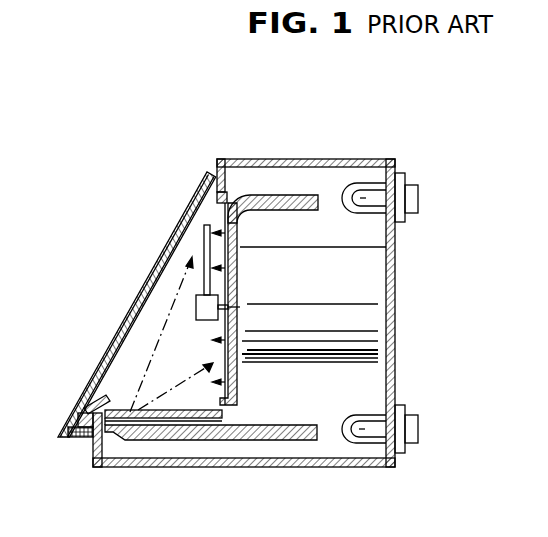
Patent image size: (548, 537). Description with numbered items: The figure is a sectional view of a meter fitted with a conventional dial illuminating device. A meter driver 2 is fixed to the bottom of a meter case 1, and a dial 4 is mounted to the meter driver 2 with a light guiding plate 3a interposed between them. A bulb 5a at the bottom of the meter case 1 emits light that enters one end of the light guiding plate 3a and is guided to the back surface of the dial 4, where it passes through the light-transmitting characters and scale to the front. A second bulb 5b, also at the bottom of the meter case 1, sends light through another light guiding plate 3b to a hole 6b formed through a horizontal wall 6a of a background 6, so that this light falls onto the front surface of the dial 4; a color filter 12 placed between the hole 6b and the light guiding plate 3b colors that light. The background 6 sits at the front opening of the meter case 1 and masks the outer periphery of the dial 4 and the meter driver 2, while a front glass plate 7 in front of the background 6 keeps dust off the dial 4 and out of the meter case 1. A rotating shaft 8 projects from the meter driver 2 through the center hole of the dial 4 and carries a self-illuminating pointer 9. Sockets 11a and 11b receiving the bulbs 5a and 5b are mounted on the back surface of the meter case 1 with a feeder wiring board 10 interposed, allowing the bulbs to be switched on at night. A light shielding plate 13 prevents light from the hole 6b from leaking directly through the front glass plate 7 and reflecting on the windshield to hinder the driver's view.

The meter case 1 is at (326, 160).
The meter driver 2 is at (352, 318).
The light guiding plate 3a is at (280, 195).
The light guiding plate 3b is at (289, 440).
The dial 4 is at (218, 206).
The bulb 5a is at (373, 183).
The bulb 5b is at (367, 446).
The background 6 is at (231, 176).
The horizontal wall 6a is at (200, 421).
The hole 6b is at (130, 410).
The front glass plate 7 is at (177, 220).
The rotating shaft 8 is at (242, 309).
The self-illuminating pointer 9 is at (200, 308).
The feeder wiring board 10 is at (398, 286).
The socket 11a is at (418, 199).
The socket 11b is at (418, 429).
The color filter 12 is at (144, 422).
The light shielding plate 13 is at (90, 402).